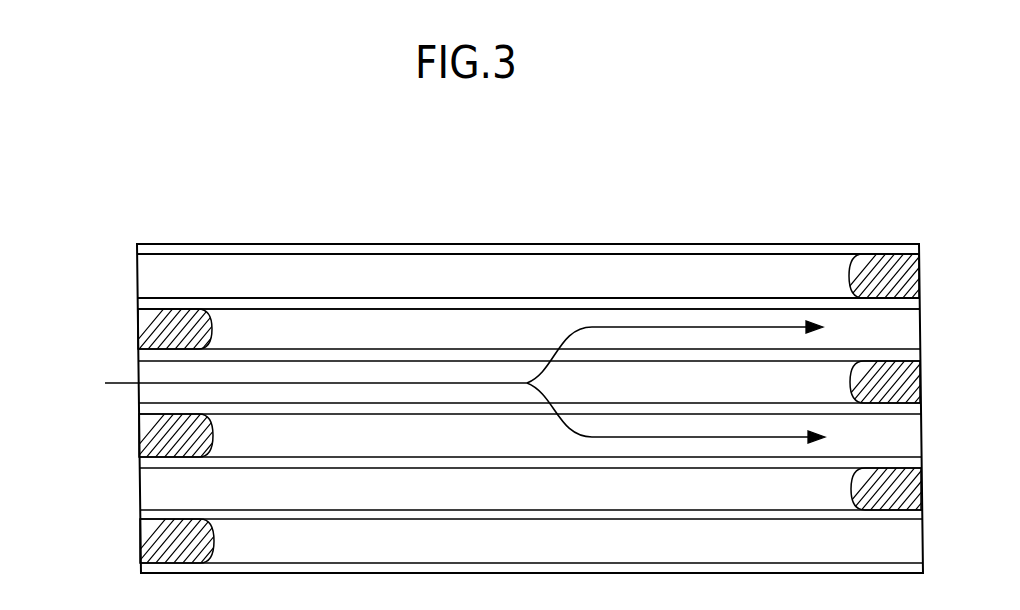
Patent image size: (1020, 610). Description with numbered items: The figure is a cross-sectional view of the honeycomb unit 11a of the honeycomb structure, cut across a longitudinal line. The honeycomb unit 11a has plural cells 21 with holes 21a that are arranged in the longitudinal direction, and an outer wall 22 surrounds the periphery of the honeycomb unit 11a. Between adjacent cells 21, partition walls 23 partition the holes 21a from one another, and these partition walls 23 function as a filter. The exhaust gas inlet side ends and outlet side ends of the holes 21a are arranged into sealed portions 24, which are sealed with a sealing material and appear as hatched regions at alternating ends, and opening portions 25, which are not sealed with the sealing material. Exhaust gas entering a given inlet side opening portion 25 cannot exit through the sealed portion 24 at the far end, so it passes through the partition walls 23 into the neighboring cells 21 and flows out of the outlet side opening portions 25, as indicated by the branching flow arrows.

The honeycomb unit 11a is at (553, 219).
The cell 21 is at (108, 275).
The hole 21a is at (729, 273).
The outer wall 22 is at (297, 252).
The partition wall 23 is at (418, 298).
The sealed portion 24 is at (184, 318).
The opening portion 25 is at (148, 278).